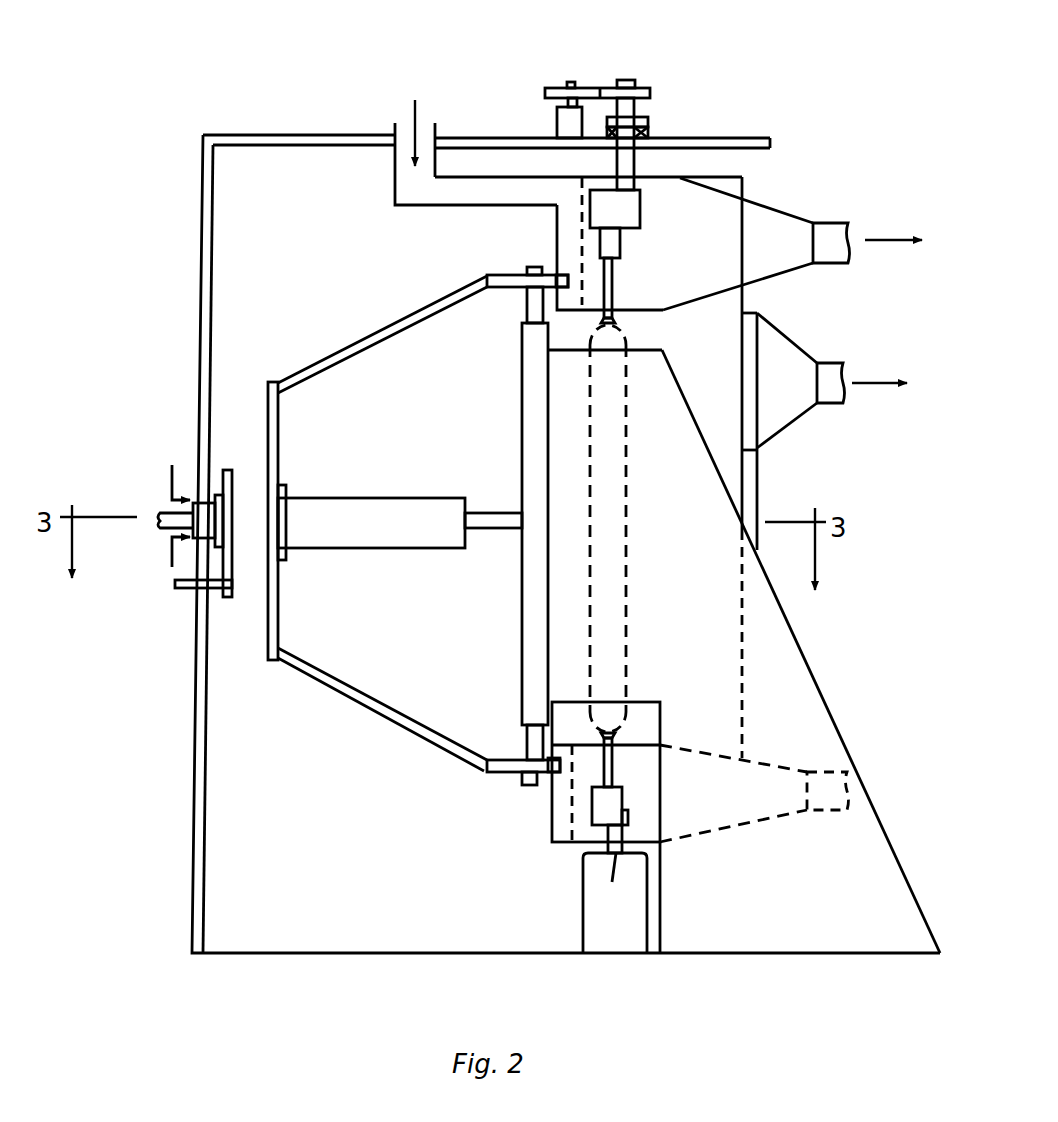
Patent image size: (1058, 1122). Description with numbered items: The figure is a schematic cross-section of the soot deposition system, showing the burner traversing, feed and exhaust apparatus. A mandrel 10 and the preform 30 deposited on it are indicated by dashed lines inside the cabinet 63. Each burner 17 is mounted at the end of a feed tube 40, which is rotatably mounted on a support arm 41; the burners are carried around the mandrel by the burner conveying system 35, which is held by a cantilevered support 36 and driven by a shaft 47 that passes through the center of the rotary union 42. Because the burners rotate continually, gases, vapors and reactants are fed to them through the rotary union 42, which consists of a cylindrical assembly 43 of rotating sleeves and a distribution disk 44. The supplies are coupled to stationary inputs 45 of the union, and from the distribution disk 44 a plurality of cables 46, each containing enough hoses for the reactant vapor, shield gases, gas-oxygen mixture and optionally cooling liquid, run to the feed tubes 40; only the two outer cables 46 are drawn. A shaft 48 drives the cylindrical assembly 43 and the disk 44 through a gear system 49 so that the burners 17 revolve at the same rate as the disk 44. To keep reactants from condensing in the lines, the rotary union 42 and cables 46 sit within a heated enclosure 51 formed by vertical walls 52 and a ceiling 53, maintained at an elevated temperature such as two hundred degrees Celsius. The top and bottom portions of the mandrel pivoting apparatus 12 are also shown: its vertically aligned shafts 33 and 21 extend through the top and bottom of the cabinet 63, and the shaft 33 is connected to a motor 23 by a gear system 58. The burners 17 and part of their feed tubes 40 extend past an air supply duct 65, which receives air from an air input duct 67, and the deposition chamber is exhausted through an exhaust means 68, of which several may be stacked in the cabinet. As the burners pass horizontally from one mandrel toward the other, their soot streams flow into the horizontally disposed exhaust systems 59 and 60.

The mandrel 10 is at (614, 286).
The mandrel pivoting apparatus 12 is at (643, 218).
The burner 17 is at (565, 282).
The shaft 21 is at (606, 827).
The motor 23 is at (558, 121).
The preform 30 is at (647, 588).
The shaft 33 is at (636, 164).
The burner conveying system 35 is at (519, 633).
The cantilevered support 36 is at (815, 700).
The feed tube 40 is at (491, 285).
The support arm 41 is at (531, 304).
The rotary union 42 is at (360, 480).
The cylindrical assembly 43 is at (358, 551).
The distribution disk 44 is at (279, 424).
The stationary inputs 45 is at (170, 466).
The cables 46 is at (385, 335).
The shaft 47 is at (177, 514).
The shaft 48 is at (180, 590).
The gear system 49 is at (243, 565).
The heated enclosure 51 is at (418, 424).
The vertical walls 52 is at (205, 866).
The ceiling 53 is at (292, 135).
The gear system 58 is at (590, 80).
The exhaust system 59 is at (778, 208).
The exhaust system 60 is at (774, 765).
The cabinet 63 is at (740, 184).
The air supply duct 65 is at (557, 222).
The air input duct 67 is at (395, 187).
The exhaust means 68 is at (793, 337).